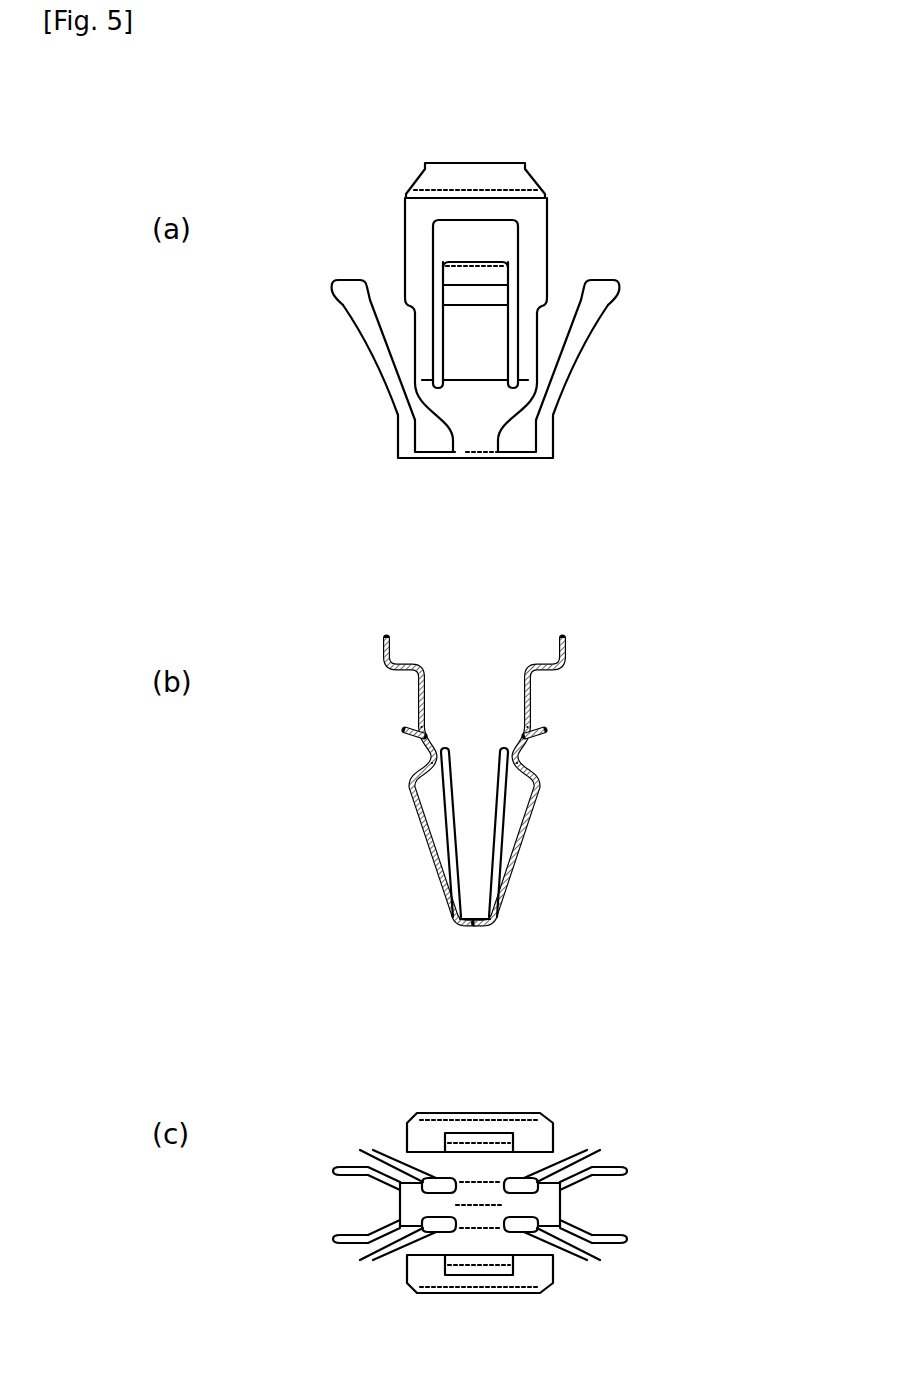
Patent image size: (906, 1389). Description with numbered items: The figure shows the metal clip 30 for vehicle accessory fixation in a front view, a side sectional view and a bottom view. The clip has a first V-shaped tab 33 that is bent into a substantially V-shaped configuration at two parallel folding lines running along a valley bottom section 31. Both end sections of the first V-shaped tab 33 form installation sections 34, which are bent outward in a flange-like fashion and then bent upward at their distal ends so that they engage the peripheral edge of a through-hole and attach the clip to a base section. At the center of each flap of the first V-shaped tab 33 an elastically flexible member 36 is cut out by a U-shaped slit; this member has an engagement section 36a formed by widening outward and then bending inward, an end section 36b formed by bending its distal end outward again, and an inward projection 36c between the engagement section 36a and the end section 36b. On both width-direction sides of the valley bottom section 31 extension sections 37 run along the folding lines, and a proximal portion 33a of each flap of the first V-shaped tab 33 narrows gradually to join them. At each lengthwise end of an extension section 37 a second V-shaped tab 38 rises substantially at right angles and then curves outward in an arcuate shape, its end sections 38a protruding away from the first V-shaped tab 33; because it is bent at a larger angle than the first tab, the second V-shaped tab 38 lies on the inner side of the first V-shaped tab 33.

The metal clip 30 is at (598, 155).
The valley bottom section 31 is at (488, 461).
The first V-shaped tab 33 is at (535, 247).
The proximal portion 33a is at (463, 443).
The installation section 34 is at (418, 200).
The elastically flexible member 36 is at (460, 321).
The engagement section 36a is at (457, 296).
The end section 36b is at (490, 262).
The inward projection 36c is at (517, 733).
The extension section 37 is at (433, 459).
The second V-shaped tab 38 is at (380, 348).
The end section 38a is at (336, 293).